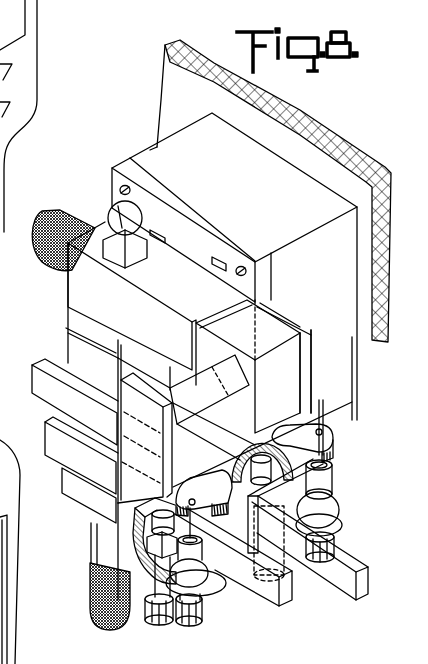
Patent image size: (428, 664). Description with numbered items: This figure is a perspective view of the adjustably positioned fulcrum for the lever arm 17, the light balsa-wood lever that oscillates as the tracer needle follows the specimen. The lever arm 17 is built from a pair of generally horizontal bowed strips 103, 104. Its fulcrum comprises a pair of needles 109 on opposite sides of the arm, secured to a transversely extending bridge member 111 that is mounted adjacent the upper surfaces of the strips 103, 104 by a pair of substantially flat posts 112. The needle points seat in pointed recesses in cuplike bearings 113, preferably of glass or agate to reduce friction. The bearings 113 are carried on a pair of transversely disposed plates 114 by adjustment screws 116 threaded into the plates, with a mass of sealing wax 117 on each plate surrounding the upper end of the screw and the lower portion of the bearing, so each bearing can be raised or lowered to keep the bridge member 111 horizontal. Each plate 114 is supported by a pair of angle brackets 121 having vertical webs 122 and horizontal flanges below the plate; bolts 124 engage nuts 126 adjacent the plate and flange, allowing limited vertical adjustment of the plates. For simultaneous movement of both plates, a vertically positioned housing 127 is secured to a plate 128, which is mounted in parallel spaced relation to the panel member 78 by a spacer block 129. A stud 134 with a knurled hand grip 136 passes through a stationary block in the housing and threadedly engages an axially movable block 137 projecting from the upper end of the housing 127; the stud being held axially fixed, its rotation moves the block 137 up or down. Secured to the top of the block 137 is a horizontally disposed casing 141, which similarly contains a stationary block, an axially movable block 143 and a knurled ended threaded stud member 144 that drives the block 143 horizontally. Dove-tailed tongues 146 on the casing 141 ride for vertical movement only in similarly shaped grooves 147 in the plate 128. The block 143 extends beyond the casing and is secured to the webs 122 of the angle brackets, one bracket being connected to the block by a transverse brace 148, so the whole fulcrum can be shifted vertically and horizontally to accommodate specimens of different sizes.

The lever arm 17 is at (344, 601).
The panel member 78 is at (285, 112).
The bowed strip 103 is at (50, 350).
The bowed strip 104 is at (50, 434).
The needle 109 is at (200, 490).
The bridge member 111 is at (337, 428).
The flat post 112 is at (202, 546).
The cuplike bearing 113 is at (333, 468).
The plate 114 is at (215, 586).
The adjustment screw 116 is at (200, 620).
The sealing wax 117 is at (332, 500).
The angle bracket 121 is at (297, 318).
The vertical web 122 is at (305, 352).
The bolt 124 is at (183, 625).
The nut 126 is at (146, 506).
The housing 127 is at (77, 499).
The plate 128 is at (184, 204).
The spacer block 129 is at (150, 150).
The stud 134 is at (95, 540).
The knurled hand grip 136 is at (90, 598).
The axially movable block 137 is at (83, 317).
The casing 141 is at (138, 321).
The axially movable block 143 is at (248, 336).
The knurled ended threaded stud member 144 is at (70, 210).
The dove-tailed tongue 146 is at (160, 238).
The groove 147 is at (220, 260).
The transverse brace 148 is at (201, 402).